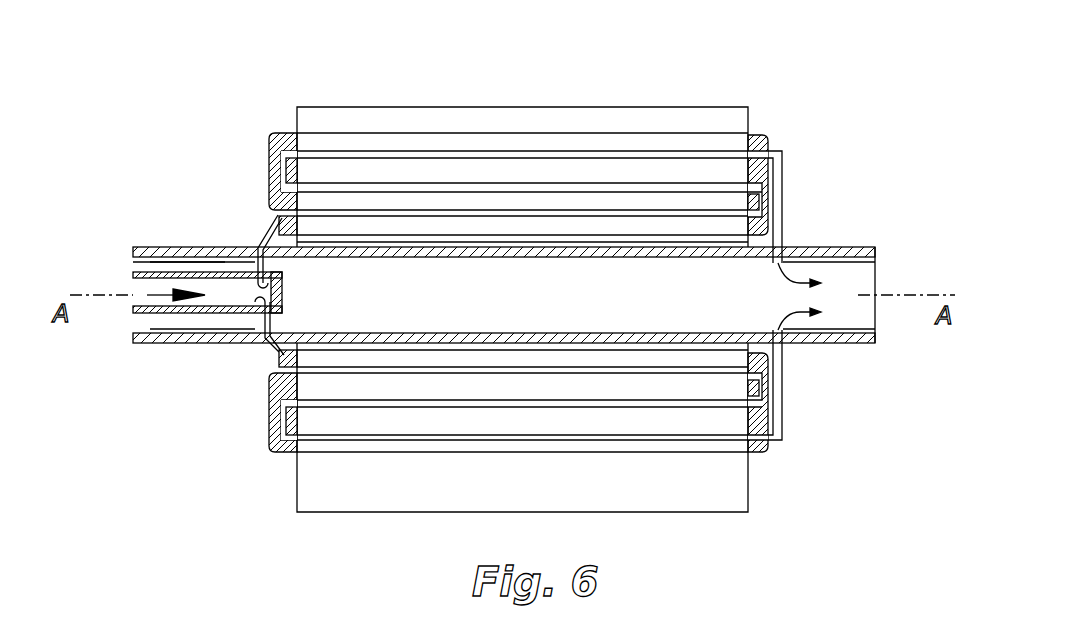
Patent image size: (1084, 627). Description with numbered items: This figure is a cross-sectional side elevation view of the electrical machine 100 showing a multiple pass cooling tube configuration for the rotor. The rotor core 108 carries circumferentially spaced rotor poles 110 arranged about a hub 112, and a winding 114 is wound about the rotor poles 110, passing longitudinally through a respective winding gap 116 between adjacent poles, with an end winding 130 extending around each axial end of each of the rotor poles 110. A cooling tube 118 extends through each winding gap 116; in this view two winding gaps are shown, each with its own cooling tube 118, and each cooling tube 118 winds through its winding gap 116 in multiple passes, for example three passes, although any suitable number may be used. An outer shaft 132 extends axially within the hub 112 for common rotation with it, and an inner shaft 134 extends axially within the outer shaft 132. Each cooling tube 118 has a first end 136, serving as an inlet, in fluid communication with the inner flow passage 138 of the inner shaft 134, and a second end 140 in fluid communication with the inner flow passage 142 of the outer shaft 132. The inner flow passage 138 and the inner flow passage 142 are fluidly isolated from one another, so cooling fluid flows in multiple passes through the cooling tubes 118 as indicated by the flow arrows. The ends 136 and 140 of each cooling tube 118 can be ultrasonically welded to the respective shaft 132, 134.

The electrical machine 100 is at (482, 277).
The core 108 is at (522, 286).
The rotor poles 110 is at (600, 119).
The hub 112 is at (440, 258).
The winding 114 is at (455, 150).
The winding gap 116 is at (264, 128).
The cooling tube 118 is at (268, 230).
The end winding 130 is at (292, 133).
The outer shaft 132 is at (137, 345).
The inner shaft 134 is at (168, 313).
The first end 136 is at (246, 247).
The inner flow passage 138 is at (220, 247).
The second end 140 is at (776, 263).
The inner flow passage 142 is at (610, 305).